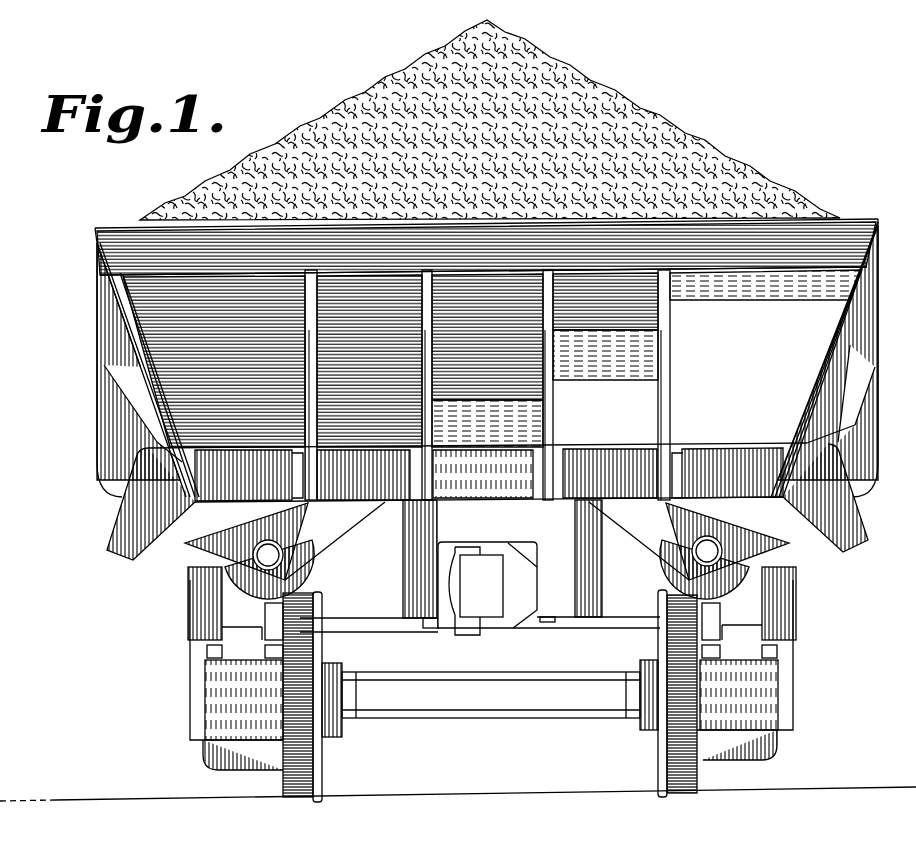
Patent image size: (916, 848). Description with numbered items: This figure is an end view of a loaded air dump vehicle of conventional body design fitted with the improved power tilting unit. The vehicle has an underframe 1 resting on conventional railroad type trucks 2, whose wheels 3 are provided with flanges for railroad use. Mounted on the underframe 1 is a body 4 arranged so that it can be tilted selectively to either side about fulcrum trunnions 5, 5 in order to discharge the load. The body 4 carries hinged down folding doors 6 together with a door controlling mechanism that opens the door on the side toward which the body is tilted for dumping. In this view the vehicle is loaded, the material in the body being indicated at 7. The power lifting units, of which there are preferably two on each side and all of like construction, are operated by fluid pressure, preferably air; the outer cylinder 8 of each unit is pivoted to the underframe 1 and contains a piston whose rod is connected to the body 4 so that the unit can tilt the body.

The underframe 1 is at (545, 628).
The trucks 2 is at (218, 698).
The wheels 3 is at (322, 762).
The body 4 is at (505, 360).
The fulcrum trunnions 5 is at (268, 555).
The hinged down folding doors 6 is at (858, 354).
The material 7 is at (760, 192).
The outer cylinder 8 is at (250, 628).